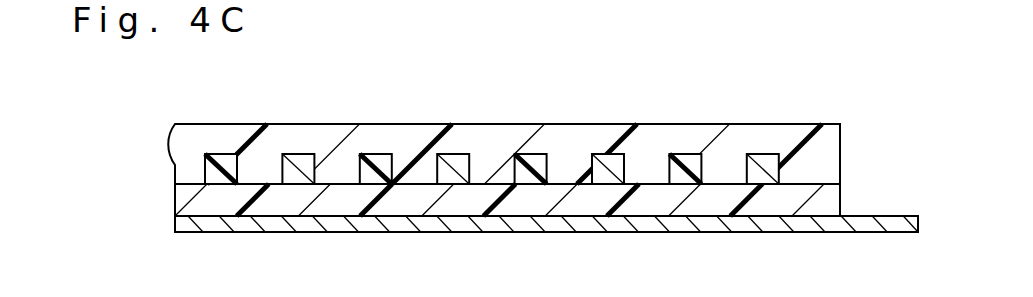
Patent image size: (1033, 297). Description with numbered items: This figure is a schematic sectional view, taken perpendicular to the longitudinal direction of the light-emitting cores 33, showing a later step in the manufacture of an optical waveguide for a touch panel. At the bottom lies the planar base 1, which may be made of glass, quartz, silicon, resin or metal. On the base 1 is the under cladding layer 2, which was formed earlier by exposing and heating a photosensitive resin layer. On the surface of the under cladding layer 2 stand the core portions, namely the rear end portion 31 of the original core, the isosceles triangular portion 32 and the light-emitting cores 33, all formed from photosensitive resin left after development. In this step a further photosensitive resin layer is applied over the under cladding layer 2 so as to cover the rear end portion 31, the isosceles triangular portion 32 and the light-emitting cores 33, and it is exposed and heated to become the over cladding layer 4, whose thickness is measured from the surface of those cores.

The base 1 is at (183, 226).
The under cladding layer 2 is at (182, 205).
The over cladding layer 4 is at (188, 128).
The rear end portion of the original core 31 is at (205, 168).
The isosceles triangular portion 32 is at (450, 171).
The light-emitting cores 33 is at (205, 158).